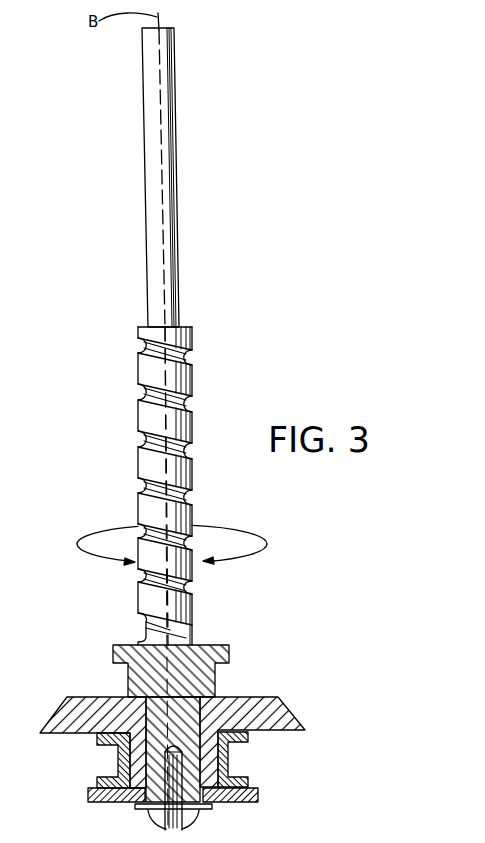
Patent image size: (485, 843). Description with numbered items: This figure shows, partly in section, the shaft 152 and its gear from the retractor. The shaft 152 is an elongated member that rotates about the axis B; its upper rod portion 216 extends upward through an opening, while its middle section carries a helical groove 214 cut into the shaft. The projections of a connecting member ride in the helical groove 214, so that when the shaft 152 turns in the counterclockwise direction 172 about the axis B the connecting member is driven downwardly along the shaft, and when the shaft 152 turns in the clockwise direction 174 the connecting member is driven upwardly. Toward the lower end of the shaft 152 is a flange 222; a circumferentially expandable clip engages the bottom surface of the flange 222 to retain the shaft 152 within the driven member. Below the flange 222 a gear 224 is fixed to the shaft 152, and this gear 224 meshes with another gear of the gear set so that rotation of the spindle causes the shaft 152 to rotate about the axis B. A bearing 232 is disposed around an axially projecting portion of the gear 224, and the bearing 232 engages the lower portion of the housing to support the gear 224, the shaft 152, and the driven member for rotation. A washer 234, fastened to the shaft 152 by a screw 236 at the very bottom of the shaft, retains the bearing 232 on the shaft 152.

The shaft 152 is at (212, 303).
The upper rod portion 216 is at (165, 180).
The helical groove 214 is at (175, 403).
The counterclockwise direction 172 is at (80, 534).
The clockwise direction 174 is at (266, 533).
The flange 222 is at (218, 642).
The gear 224 is at (287, 713).
The bearing 232 is at (242, 742).
The washer 234 is at (256, 795).
The screw 236 is at (193, 817).